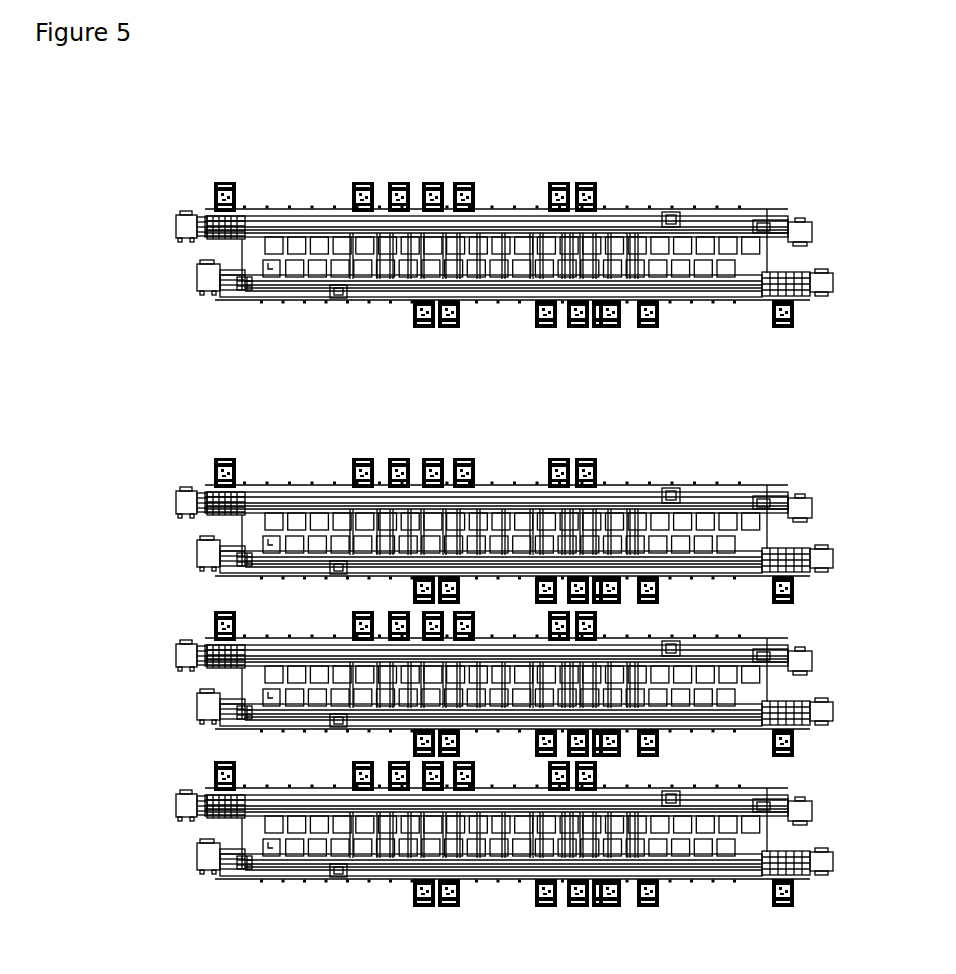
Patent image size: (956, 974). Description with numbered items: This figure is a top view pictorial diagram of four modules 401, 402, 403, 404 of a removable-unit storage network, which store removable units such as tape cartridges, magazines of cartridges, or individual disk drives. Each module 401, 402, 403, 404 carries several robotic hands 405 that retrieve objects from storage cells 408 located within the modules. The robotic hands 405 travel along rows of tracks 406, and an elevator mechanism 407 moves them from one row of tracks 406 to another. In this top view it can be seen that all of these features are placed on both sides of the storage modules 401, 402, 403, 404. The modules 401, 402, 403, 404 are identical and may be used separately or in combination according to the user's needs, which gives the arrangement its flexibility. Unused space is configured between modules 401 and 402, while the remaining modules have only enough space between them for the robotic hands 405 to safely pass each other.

The module 401 is at (493, 242).
The module 402 is at (900, 546).
The module 403 is at (900, 696).
The module 404 is at (900, 842).
The robotic hands 405 is at (204, 185).
The tracks 406 is at (298, 207).
The elevator mechanism 407 is at (812, 304).
The storage cells 408 is at (265, 268).